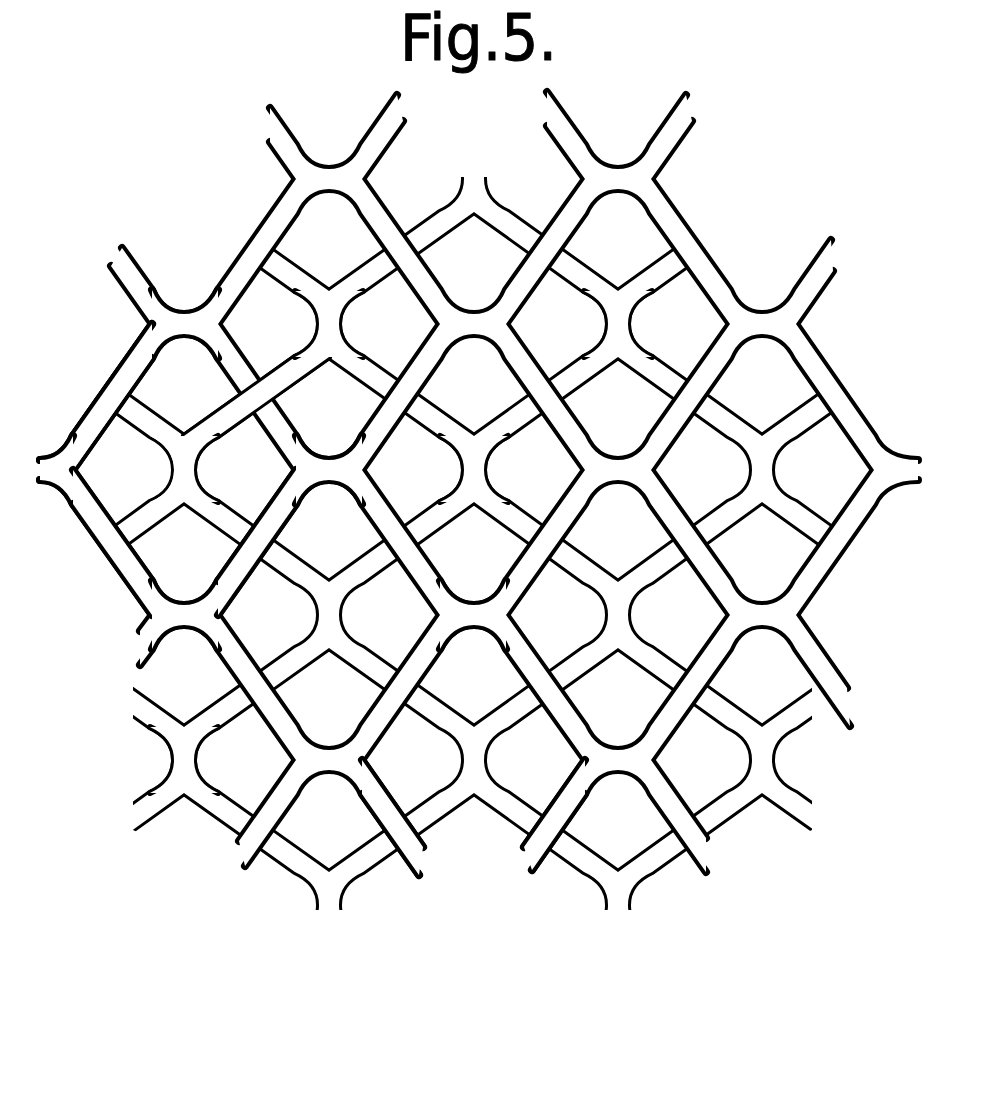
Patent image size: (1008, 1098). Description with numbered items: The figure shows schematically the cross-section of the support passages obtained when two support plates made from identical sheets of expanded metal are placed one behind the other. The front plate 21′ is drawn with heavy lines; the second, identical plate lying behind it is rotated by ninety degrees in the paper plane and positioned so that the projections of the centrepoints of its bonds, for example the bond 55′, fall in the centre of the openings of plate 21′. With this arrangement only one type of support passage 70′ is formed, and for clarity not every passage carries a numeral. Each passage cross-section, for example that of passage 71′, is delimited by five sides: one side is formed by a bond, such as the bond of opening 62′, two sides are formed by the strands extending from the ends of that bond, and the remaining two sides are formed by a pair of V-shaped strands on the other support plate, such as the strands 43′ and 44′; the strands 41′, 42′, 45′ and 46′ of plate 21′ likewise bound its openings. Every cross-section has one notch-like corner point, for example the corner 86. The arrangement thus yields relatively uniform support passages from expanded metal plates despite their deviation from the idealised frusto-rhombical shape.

The support plate 21′ is at (83, 420).
The first strand 41′ is at (107, 393).
The second strand 42′ is at (73, 497).
The V-shaped strand 43′ is at (233, 327).
The V-shaped strand 44′ is at (233, 577).
The strand 45′ is at (148, 321).
The junction node 46′ is at (148, 613).
The bond 55′ is at (697, 305).
The opening 62′ is at (302, 311).
The support passage 70′ is at (451, 729).
The support passage 71′ is at (261, 455).
The notch-like corner point 86 is at (297, 468).